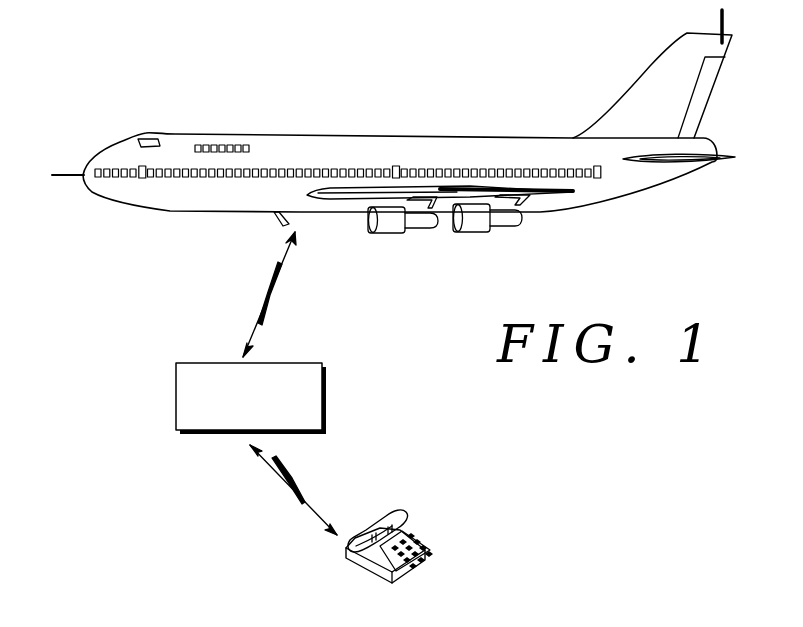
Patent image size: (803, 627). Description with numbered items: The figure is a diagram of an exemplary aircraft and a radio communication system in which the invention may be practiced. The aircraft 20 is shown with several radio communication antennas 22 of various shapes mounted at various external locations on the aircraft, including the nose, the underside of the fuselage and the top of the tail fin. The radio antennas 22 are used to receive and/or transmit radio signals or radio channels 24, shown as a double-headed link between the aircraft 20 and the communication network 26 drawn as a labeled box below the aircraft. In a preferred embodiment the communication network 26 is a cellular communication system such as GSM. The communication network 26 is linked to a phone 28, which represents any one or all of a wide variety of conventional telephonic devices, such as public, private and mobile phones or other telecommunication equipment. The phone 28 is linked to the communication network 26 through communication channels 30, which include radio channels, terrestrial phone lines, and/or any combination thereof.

The aircraft 20 is at (310, 147).
The radio communication antennas 22 is at (724, 22).
The radio channels 24 is at (261, 312).
The communication network 26 is at (327, 392).
The phone 28 is at (398, 512).
The communication channels 30 is at (296, 487).